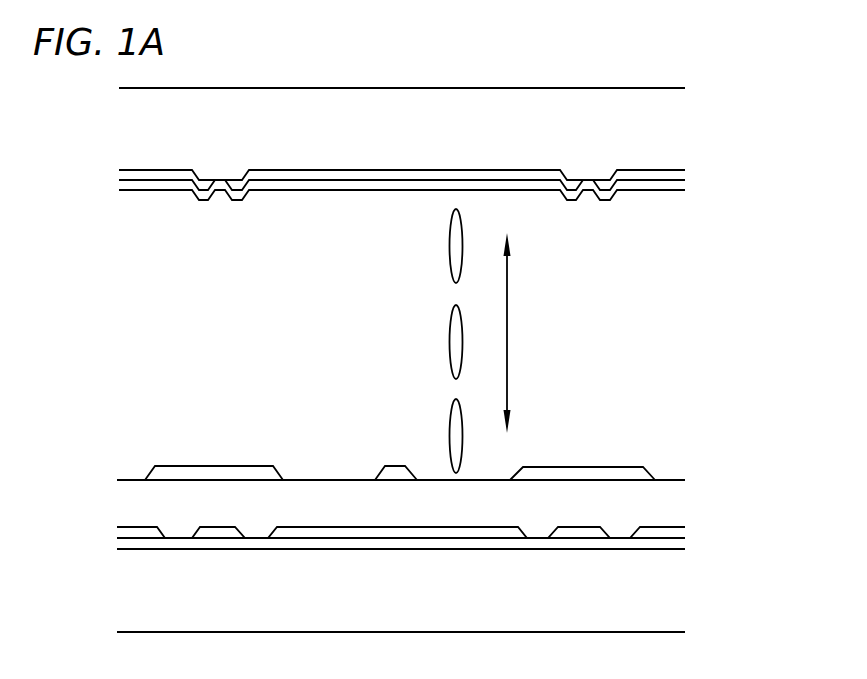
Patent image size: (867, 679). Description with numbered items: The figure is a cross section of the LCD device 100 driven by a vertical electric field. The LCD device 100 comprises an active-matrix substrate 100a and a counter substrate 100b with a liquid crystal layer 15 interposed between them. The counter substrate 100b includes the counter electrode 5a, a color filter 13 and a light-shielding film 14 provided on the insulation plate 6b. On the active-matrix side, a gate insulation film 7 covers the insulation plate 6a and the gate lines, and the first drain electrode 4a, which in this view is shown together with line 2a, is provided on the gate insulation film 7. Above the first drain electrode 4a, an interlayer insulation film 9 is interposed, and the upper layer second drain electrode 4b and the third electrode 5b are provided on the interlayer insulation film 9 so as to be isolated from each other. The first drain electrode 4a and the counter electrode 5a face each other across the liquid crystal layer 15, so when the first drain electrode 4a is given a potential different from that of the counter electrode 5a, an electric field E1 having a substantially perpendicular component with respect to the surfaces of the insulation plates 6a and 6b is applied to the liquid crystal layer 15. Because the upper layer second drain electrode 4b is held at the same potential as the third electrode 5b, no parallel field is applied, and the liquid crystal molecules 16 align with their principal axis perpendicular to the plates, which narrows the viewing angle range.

The LCD device 100 is at (681, 52).
The active-matrix substrate 100a is at (688, 455).
The counter substrate 100b is at (688, 87).
The insulation plate 6a is at (228, 607).
The insulation plate 6b is at (163, 134).
The counter electrode 5a is at (152, 188).
The third electrode 5b is at (178, 468).
The color filter 13 is at (361, 176).
The light-shielding film 14 is at (225, 176).
The liquid crystal layer 15 is at (187, 396).
The liquid crystal molecules 16 is at (452, 323).
The interlayer insulation film 9 is at (127, 493).
The gate insulation film 7 is at (117, 540).
The gate electrode 2a is at (207, 535).
The first drain electrode 4a is at (398, 535).
The upper layer second drain electrode 4b is at (402, 475).
The electric field E1 is at (522, 333).